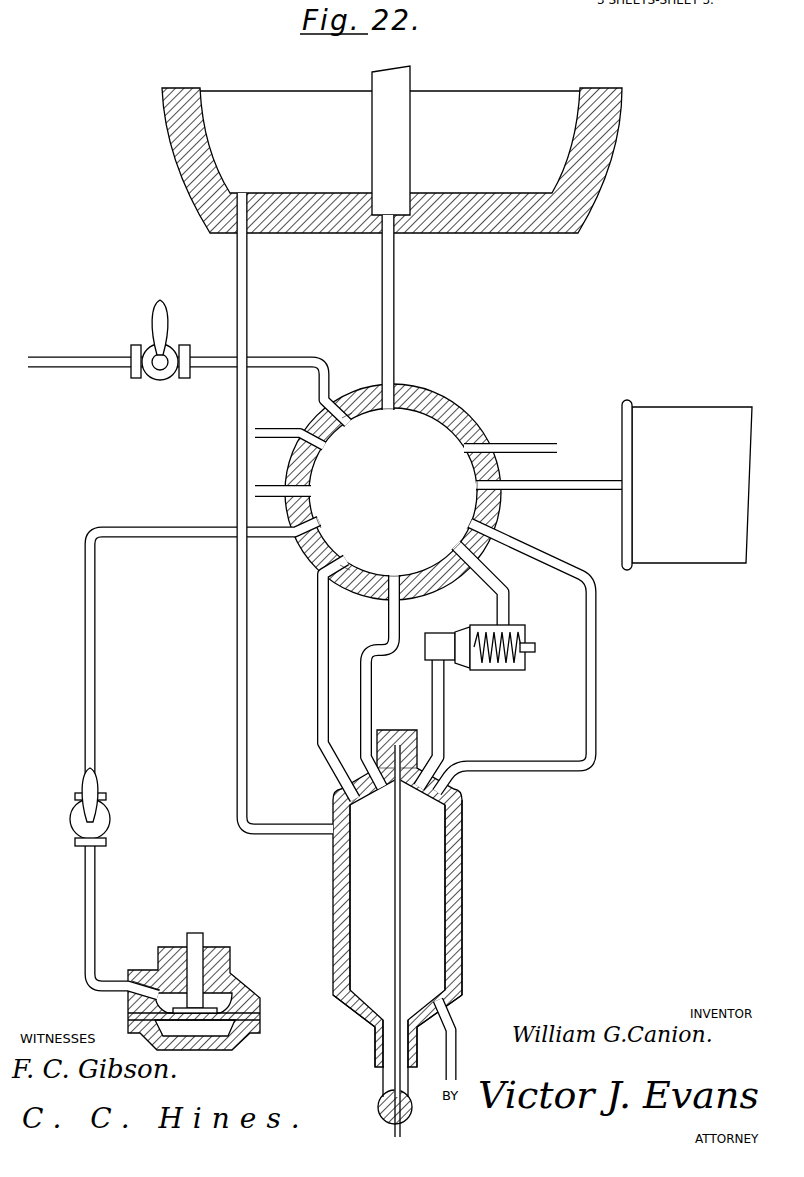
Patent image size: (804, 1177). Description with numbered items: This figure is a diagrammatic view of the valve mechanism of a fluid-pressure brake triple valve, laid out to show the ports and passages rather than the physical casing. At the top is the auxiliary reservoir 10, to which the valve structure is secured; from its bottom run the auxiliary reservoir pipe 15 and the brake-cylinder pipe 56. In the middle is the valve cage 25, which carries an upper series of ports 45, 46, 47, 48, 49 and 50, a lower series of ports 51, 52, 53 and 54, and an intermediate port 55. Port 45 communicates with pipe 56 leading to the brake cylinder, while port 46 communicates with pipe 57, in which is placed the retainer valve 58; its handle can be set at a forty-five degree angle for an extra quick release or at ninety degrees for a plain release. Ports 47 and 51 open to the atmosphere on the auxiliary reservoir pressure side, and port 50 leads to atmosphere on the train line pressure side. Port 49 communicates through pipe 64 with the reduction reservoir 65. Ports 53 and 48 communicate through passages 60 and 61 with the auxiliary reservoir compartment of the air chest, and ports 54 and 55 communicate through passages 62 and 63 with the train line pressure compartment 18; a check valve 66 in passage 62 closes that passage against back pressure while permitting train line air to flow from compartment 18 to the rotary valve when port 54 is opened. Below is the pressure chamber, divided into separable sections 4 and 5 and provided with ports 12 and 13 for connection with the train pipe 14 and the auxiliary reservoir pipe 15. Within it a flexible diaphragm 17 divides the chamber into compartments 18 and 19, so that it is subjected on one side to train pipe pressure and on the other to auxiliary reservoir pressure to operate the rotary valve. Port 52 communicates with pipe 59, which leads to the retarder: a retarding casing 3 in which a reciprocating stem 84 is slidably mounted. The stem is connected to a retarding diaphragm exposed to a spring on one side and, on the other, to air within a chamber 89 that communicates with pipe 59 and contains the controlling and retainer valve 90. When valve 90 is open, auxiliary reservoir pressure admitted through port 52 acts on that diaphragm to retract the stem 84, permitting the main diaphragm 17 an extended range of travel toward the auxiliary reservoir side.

The auxiliary reservoir 10 is at (486, 92).
The pipe 56 is at (395, 292).
The retainer valve 58 is at (150, 352).
The pipe 57 is at (271, 360).
The valve cage 25 is at (432, 391).
The port 45 is at (388, 412).
The port 46 is at (336, 430).
The port 47 is at (325, 450).
The port 48 is at (394, 575).
The port 49 is at (476, 486).
The port 50 is at (465, 450).
The port 51 is at (310, 493).
The port 52 is at (320, 523).
The port 53 is at (345, 562).
The port 54 is at (456, 548).
The intermediate port 55 is at (470, 526).
The reduction reservoir 65 is at (675, 415).
The pipe 64 is at (568, 491).
The auxiliary reservoir pipe 15 is at (237, 615).
The passage 60 is at (316, 656).
The pipe 59 is at (84, 694).
The passage 61 is at (372, 694).
The passage 62 is at (445, 717).
The passage 63 is at (597, 655).
The check valve 66 is at (493, 672).
The controlling and retainer valve 90 is at (72, 818).
The port 13 is at (335, 820).
The compartment 19 is at (360, 857).
The main section 4 is at (335, 877).
The section 5 is at (458, 882).
The compartment 18 is at (425, 922).
The flexible diaphragm 17 is at (397, 928).
The port 12 is at (458, 992).
The train pipe 14 is at (447, 1045).
The stem 84 is at (195, 946).
The retarding casing 3 is at (215, 950).
The chamber 89 is at (165, 985).